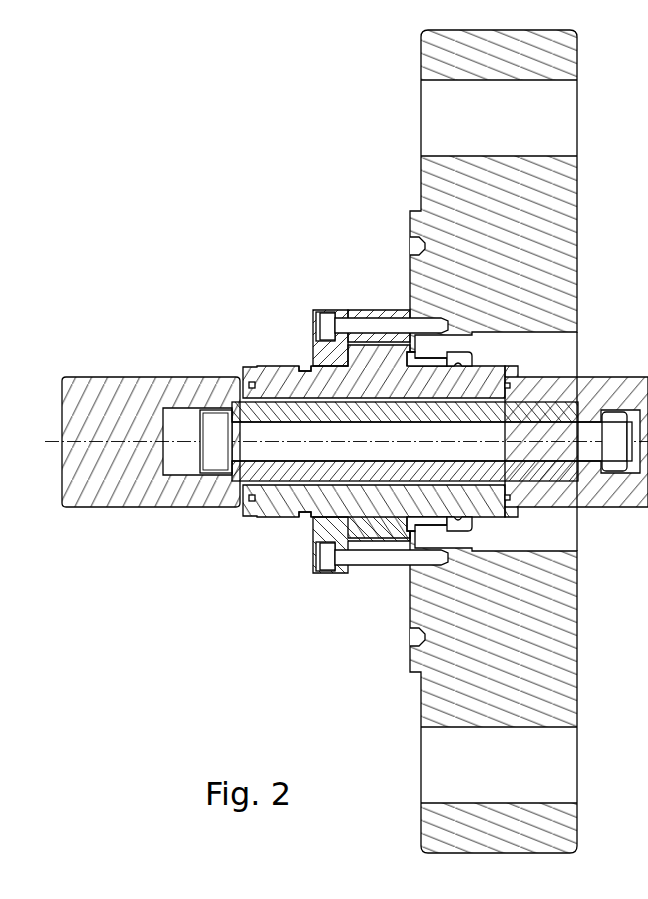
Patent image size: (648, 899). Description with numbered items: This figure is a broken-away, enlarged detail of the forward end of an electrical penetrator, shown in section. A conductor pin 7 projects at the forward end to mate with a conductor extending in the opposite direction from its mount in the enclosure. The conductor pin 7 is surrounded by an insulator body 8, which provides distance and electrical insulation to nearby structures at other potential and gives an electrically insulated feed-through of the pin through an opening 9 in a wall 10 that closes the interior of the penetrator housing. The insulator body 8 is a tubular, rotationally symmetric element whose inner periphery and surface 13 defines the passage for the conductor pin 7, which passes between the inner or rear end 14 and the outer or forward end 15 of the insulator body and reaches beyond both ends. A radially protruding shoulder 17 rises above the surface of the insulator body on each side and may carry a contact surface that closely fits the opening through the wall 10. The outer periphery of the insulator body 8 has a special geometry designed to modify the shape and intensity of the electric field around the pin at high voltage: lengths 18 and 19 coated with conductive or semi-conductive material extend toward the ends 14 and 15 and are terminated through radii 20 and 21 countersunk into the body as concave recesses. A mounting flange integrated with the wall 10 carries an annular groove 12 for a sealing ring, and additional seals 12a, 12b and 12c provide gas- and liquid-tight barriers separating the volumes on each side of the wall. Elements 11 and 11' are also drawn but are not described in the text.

The conductor pin 7 is at (195, 494).
The insulator body 8 is at (257, 366).
The opening 9 is at (428, 360).
The wall 10 is at (410, 278).
The bracket 11 is at (310, 310).
The flange of bracket 11' is at (364, 289).
The annular groove 12 is at (410, 228).
The seal 12a is at (250, 383).
The seal 12b is at (426, 355).
The seal 12c is at (508, 387).
The inner periphery and surface 13 is at (457, 403).
The inner or rear end 14 is at (520, 363).
The outer or forward end 15 is at (243, 519).
The shoulder 17 is at (383, 531).
The coated length or surface 18 is at (440, 360).
The coated length or surface 19 is at (313, 363).
The radius 20 is at (462, 363).
The radius 21 is at (297, 368).